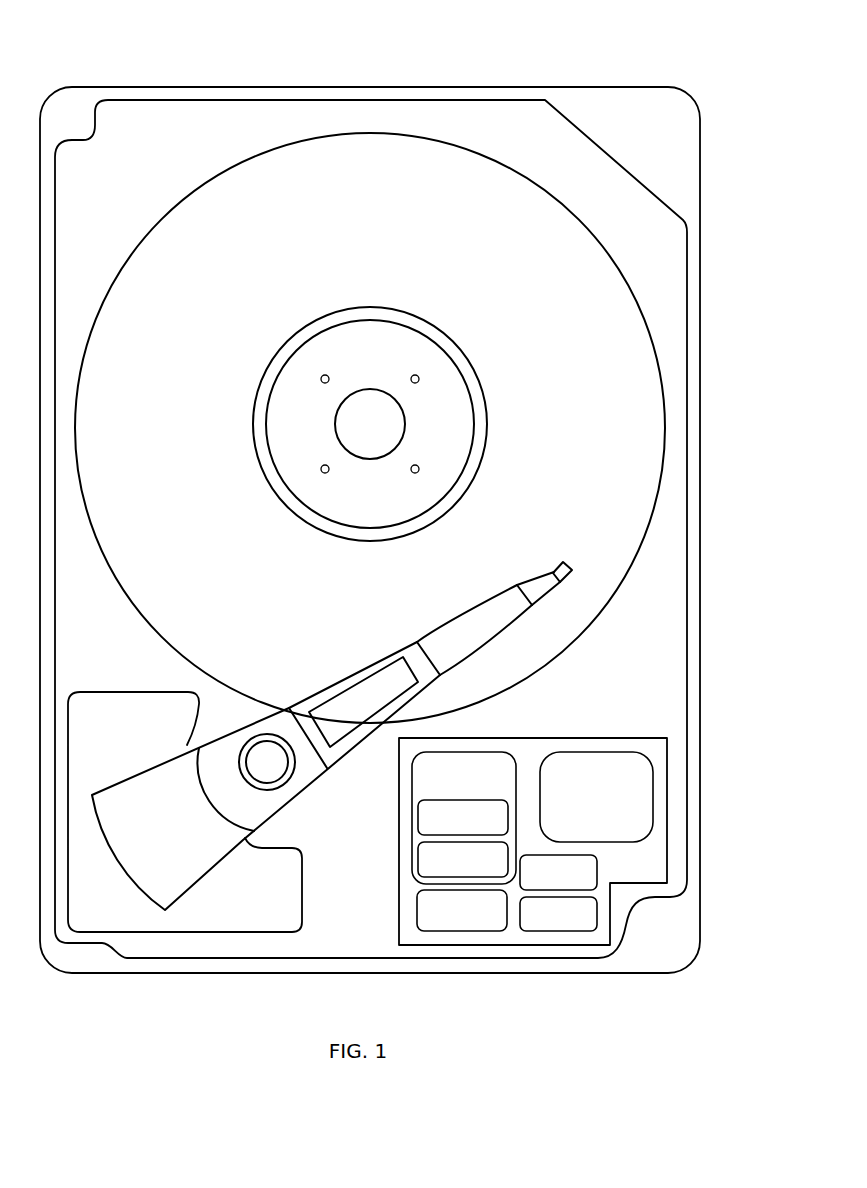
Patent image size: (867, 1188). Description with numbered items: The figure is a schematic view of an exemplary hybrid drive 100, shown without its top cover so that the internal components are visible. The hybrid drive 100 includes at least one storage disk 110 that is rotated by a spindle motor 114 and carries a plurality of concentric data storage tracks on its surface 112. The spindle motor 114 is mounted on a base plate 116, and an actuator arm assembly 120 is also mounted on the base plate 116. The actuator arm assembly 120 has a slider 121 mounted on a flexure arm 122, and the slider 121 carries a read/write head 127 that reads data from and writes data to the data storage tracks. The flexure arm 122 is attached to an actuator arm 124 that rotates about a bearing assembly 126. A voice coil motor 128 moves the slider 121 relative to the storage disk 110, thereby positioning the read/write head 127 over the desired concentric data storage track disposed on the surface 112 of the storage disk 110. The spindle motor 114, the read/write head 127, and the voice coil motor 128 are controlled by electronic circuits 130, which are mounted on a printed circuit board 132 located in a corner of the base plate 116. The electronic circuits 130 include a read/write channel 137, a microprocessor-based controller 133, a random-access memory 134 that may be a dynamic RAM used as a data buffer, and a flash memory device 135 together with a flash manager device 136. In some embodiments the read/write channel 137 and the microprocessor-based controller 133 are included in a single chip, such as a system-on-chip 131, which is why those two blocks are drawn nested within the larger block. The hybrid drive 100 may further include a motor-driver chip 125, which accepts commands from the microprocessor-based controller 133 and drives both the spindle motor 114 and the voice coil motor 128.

The hybrid drive 100 is at (122, 48).
The storage disk 110 is at (162, 217).
The surface 112 is at (153, 406).
The spindle motor 114 is at (460, 369).
The base plate 116 is at (687, 553).
The actuator arm assembly 120 is at (341, 580).
The slider 121 is at (567, 563).
The flexure arm 122 is at (528, 572).
The actuator arm 124 is at (438, 622).
The motor-driver chip 125 is at (444, 922).
The bearing assembly 126 is at (302, 812).
The read/write head 127 is at (560, 536).
The voice coil motor 128 is at (302, 877).
The electronic circuits 130 is at (545, 742).
The system-on-chip 131 is at (444, 791).
The printed circuit board 132 is at (612, 737).
The microprocessor-based controller 133 is at (444, 829).
The random-access memory 134 is at (539, 885).
The flash memory device 135 is at (577, 808).
The flash manager device 136 is at (539, 926).
The read/write channel 137 is at (444, 871).